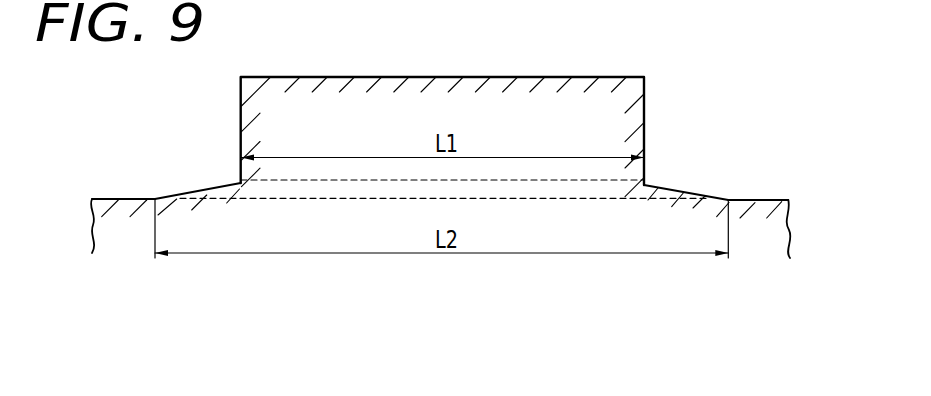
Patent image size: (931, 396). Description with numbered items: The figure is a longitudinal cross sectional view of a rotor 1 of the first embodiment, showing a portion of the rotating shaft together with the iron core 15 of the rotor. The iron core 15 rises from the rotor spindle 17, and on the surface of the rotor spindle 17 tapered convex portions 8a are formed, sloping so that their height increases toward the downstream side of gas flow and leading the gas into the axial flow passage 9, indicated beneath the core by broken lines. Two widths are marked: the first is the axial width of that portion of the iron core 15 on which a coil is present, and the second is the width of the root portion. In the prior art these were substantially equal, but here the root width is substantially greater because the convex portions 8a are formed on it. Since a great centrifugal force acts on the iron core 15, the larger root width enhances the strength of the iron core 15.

The electronic device 1 is at (790, 182).
The convex portions 8a is at (210, 189).
The axial flow passage 9 is at (323, 190).
The iron core of the rotor 15 is at (306, 78).
The rotor spindle 17 is at (122, 212).